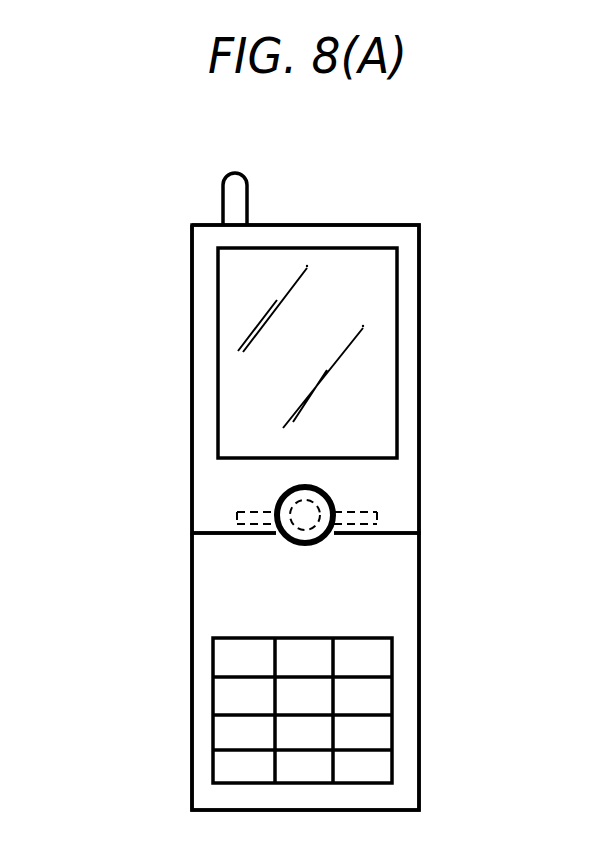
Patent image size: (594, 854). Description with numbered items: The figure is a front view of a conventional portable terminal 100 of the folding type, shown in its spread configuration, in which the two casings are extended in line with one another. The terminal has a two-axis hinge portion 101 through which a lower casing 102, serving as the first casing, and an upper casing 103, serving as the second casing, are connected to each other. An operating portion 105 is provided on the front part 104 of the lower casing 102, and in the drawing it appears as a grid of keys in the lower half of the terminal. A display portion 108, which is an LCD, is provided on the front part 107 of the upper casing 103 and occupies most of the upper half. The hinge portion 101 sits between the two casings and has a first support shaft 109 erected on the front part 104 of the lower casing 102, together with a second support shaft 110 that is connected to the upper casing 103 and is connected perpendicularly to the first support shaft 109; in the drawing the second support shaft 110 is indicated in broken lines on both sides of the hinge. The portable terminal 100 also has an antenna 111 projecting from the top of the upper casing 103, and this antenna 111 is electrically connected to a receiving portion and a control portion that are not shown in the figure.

The portable terminal 100 is at (406, 191).
The hinge portion 101 is at (286, 543).
The lower casing 102 is at (181, 661).
The upper casing 103 is at (182, 409).
The front part of the lower casing 104 is at (199, 748).
The operating portion 105 is at (393, 692).
The front part of the upper casing 107 is at (208, 345).
The display portion 108 is at (360, 290).
The first support shaft 109 is at (310, 530).
The second support shaft 110 is at (237, 515).
The antenna 111 is at (229, 197).